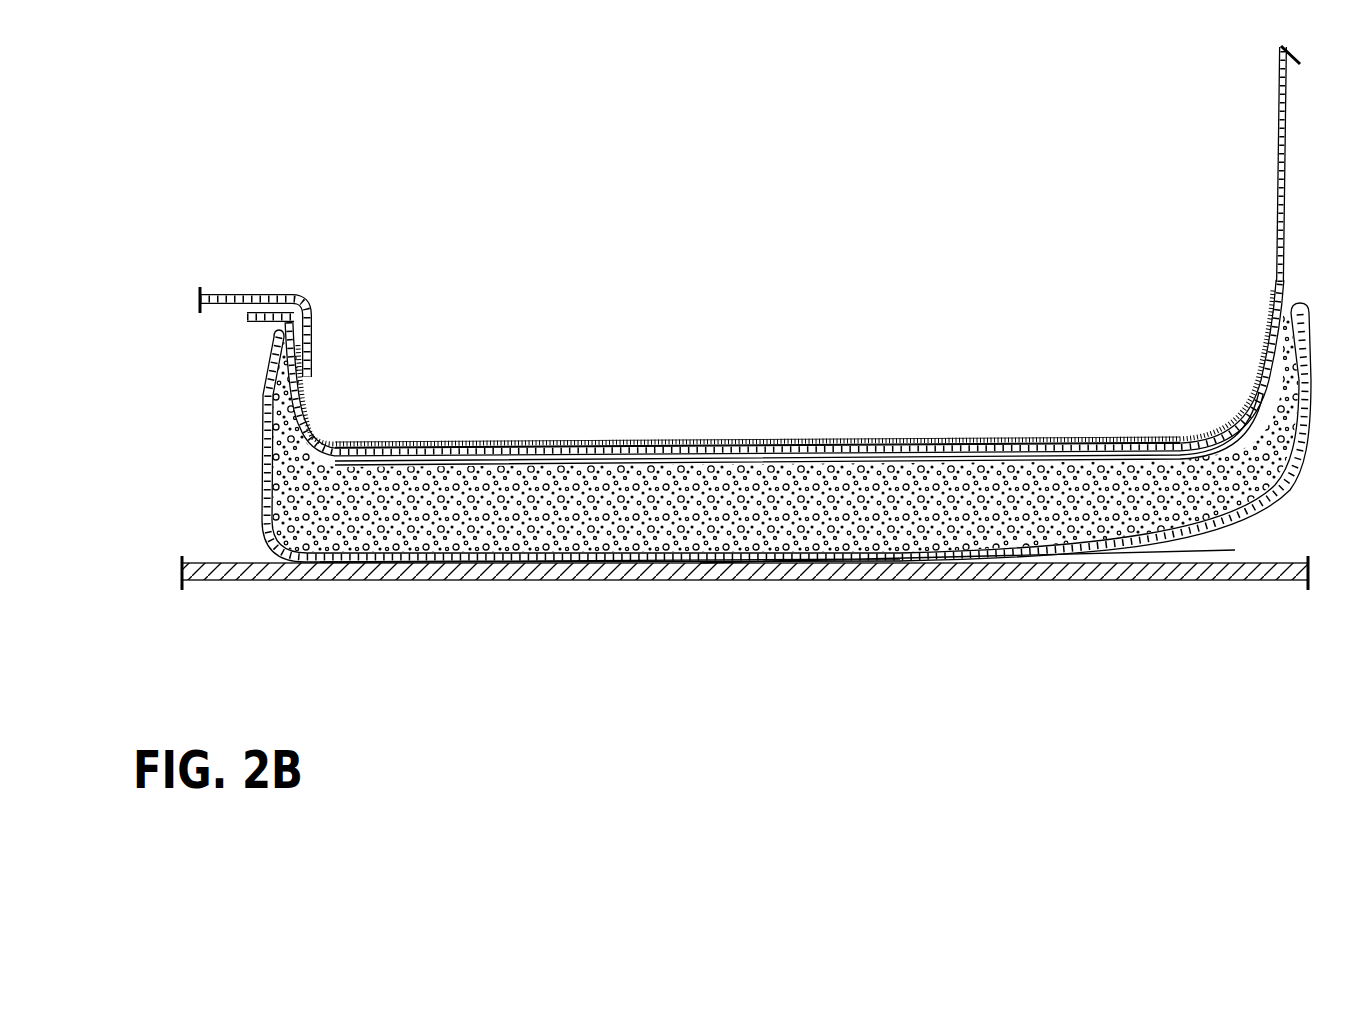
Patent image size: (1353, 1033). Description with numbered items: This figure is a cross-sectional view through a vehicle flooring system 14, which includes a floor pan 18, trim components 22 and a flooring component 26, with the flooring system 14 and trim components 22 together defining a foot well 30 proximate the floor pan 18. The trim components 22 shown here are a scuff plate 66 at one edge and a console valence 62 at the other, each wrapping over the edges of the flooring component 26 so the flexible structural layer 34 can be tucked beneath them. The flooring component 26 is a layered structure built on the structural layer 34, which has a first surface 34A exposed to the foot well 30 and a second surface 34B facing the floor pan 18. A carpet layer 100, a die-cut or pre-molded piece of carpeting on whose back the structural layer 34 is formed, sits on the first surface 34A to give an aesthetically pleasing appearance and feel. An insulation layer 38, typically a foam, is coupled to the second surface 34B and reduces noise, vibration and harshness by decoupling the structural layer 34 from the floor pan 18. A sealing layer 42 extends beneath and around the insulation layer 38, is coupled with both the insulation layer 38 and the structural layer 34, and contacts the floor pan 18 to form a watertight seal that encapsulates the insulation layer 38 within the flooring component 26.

The flooring system 14 is at (429, 378).
The floor pan 18 is at (1000, 577).
The trim components 22 is at (733, 211).
The flooring component 26 is at (577, 446).
The foot well 30 is at (748, 242).
The structural layer 34 is at (785, 443).
The first surface 34A is at (745, 443).
The second surface 34B is at (857, 469).
The insulation layer 38 is at (1012, 503).
The sealing layer 42 is at (752, 560).
The console valences 62 is at (1273, 173).
The scuff plates 66 is at (240, 290).
The carpet layer 100 is at (677, 444).